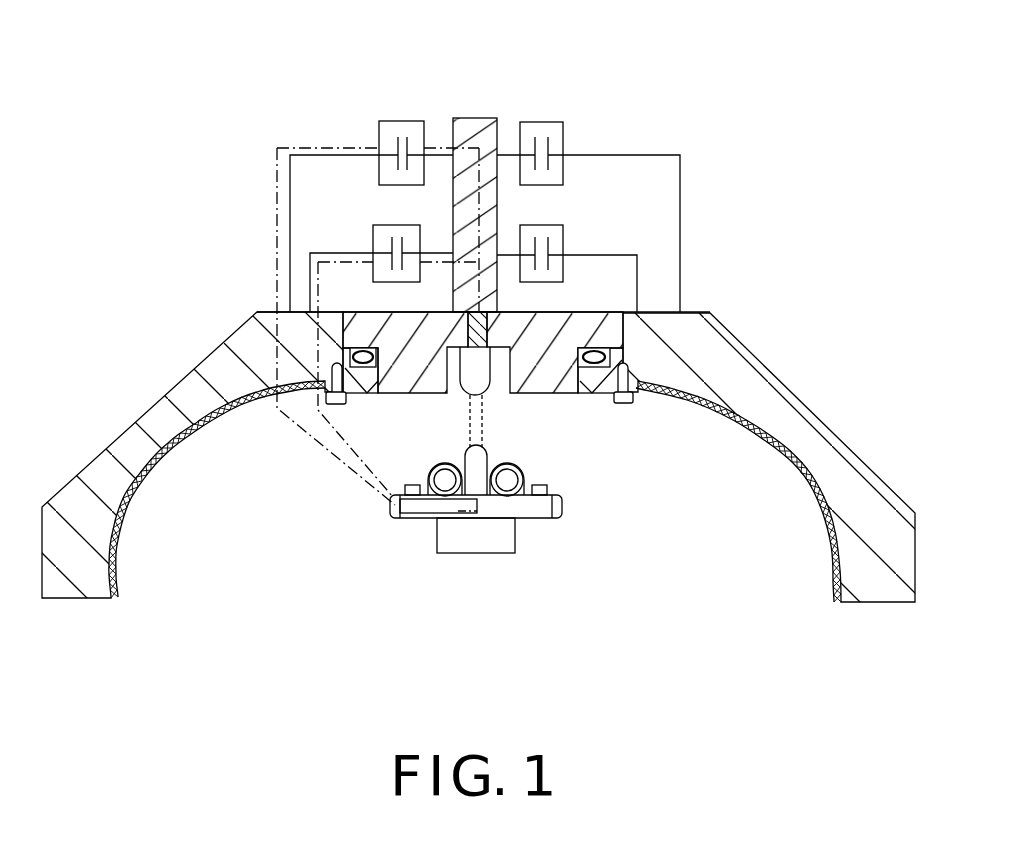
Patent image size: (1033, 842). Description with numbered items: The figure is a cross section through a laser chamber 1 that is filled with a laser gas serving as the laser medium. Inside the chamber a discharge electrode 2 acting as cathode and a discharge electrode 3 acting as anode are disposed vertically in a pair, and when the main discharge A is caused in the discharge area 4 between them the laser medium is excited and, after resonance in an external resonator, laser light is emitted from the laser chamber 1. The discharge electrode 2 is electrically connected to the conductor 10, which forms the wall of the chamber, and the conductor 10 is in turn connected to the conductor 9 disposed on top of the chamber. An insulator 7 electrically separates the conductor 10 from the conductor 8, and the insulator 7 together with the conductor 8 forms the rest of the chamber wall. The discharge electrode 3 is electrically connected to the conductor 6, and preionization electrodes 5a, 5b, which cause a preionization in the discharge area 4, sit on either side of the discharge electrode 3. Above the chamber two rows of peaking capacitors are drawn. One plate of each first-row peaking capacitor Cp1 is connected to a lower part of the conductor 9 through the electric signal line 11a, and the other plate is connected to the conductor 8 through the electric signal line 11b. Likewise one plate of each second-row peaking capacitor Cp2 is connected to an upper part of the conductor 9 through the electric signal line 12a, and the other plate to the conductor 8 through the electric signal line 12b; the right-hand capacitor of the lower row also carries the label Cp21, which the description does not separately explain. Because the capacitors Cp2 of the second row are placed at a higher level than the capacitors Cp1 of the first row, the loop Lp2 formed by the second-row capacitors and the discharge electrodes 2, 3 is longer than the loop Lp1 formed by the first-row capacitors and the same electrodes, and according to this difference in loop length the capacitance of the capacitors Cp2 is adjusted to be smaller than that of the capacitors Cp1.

The laser chamber 1 is at (735, 337).
The discharge electrode 2 is at (488, 389).
The discharge electrode 3 is at (490, 455).
The discharge area 4 is at (460, 411).
The preionization electrode 5a is at (396, 506).
The preionization electrode 5b is at (527, 470).
The conductor 6 is at (493, 543).
The insulator 7 is at (612, 313).
The conductor 8 is at (190, 388).
The conductor 9 is at (480, 117).
The conductor 10 is at (527, 313).
The electric signal line 11a is at (435, 252).
The electric signal line 11b is at (323, 250).
The electric signal line 12a is at (443, 150).
The electric signal line 12b is at (322, 153).
The peaking capacitor Cp1 is at (380, 223).
The peaking capacitor Cp2 is at (393, 120).
The parasitic capacitance Cp21 is at (560, 227).
The loop Lp1 is at (317, 278).
The loop Lp2 is at (277, 160).
The main discharge A is at (468, 423).